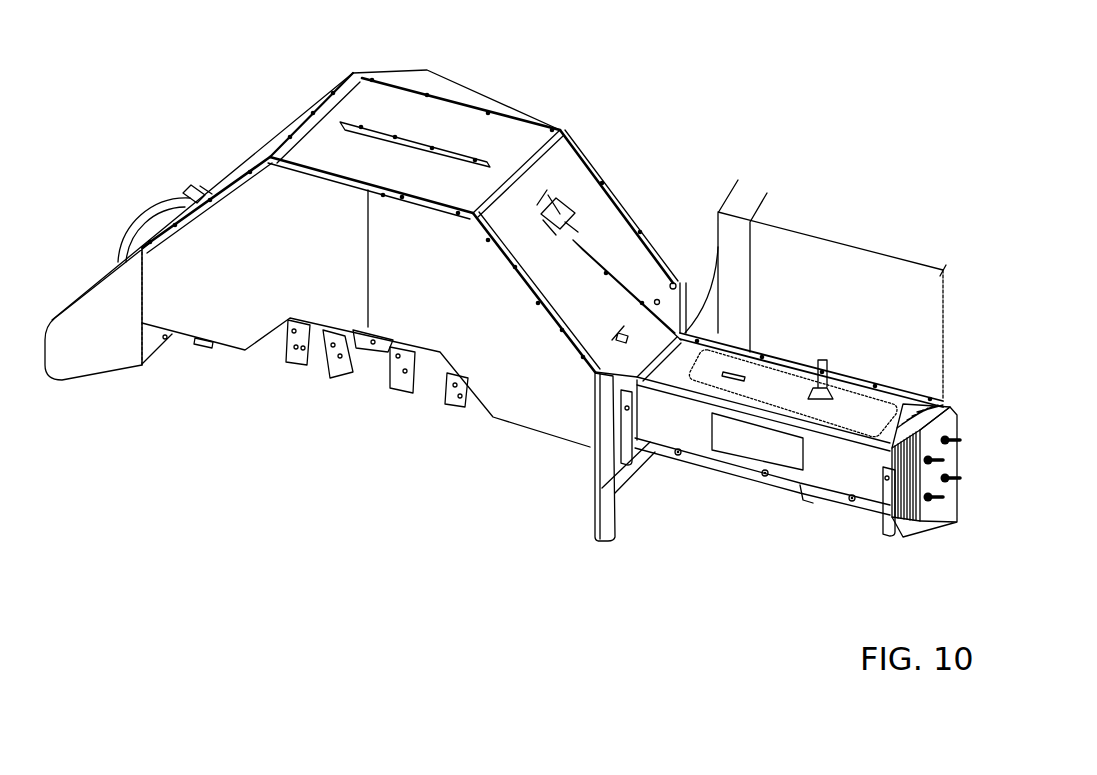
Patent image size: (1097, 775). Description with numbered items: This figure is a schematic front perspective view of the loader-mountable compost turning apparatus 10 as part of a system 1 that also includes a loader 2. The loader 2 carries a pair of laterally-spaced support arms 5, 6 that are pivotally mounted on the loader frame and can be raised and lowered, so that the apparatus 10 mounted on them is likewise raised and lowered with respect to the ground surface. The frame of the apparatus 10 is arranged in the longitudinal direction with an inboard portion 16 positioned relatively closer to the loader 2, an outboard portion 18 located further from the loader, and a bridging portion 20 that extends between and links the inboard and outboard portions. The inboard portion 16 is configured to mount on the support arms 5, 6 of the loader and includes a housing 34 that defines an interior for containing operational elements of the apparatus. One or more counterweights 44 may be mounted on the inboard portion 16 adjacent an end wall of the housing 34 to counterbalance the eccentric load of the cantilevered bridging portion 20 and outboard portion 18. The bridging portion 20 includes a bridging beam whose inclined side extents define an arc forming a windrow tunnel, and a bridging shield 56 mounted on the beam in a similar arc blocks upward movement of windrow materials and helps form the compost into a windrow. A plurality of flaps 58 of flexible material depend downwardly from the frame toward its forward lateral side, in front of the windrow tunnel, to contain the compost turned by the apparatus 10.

The system 1 is at (818, 94).
The compost turning apparatus 10 is at (666, 82).
The bridging portion 20 is at (620, 152).
The bridging shield 56 is at (600, 220).
The support arm 6 is at (752, 243).
The loader 2 is at (908, 241).
The support arm 5 is at (943, 333).
The outboard portion 18 is at (141, 392).
The flaps 58 is at (255, 347).
The inboard portion 16 is at (754, 512).
The housing 34 is at (834, 472).
The counterweights 44 is at (953, 497).